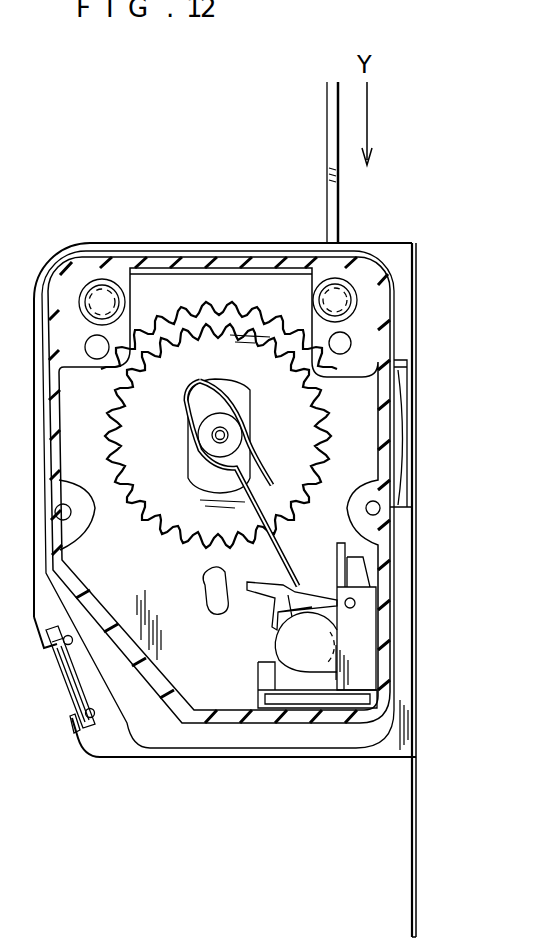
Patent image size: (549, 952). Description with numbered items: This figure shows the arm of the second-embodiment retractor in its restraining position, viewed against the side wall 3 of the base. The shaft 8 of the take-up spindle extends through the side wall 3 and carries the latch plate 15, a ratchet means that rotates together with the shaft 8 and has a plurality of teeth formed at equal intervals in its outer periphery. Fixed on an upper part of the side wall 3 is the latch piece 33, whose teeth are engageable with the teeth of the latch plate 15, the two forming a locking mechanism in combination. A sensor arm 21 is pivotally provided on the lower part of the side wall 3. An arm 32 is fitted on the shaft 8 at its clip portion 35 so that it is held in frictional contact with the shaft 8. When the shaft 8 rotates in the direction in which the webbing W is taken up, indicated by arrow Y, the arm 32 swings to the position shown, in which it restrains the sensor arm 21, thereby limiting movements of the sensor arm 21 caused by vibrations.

The side wall 3 is at (208, 681).
The shaft 8 is at (207, 443).
The latch plate 15 is at (302, 410).
The sensor arm 21 is at (338, 631).
The arm 32 is at (280, 548).
The latch piece 33 is at (185, 288).
The clip portion 35 is at (188, 430).
The webbing W is at (327, 120).